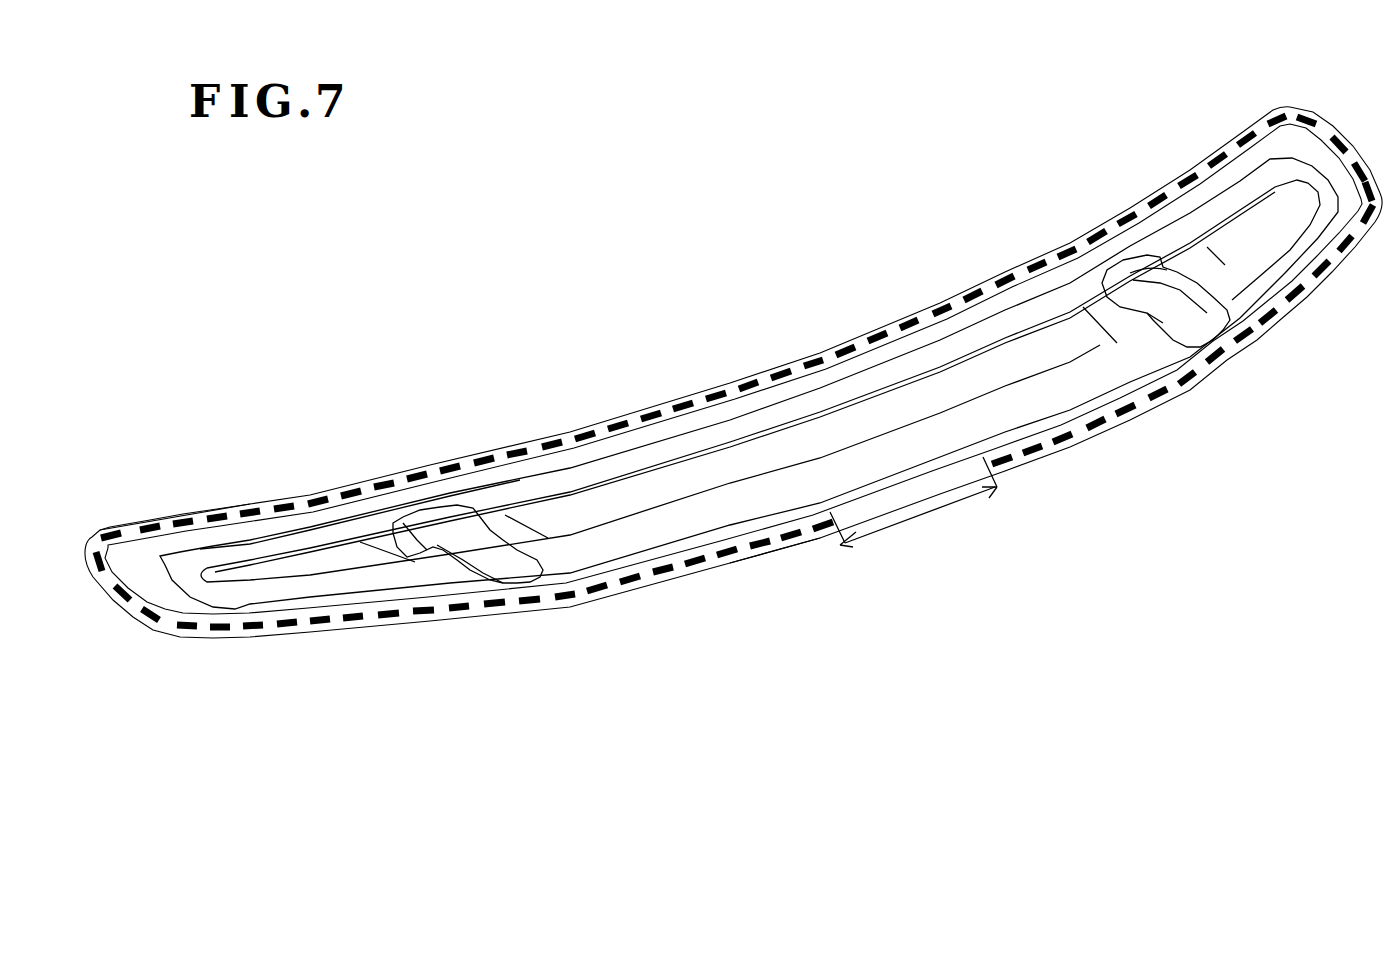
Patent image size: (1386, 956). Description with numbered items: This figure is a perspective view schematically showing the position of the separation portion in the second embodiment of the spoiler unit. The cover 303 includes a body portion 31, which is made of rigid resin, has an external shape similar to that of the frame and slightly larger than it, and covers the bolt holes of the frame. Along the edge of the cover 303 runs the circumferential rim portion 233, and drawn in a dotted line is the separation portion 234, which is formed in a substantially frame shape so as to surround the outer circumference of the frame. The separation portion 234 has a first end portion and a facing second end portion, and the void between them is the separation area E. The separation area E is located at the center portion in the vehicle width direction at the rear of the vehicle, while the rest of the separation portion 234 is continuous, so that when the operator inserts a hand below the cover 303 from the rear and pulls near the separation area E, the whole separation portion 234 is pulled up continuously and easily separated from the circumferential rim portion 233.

The cover 303 is at (1218, 81).
The body portion 31 is at (715, 412).
The circumferential rim portion 233 is at (183, 628).
The separation portion 234 is at (764, 536).
The separation area E is at (920, 512).